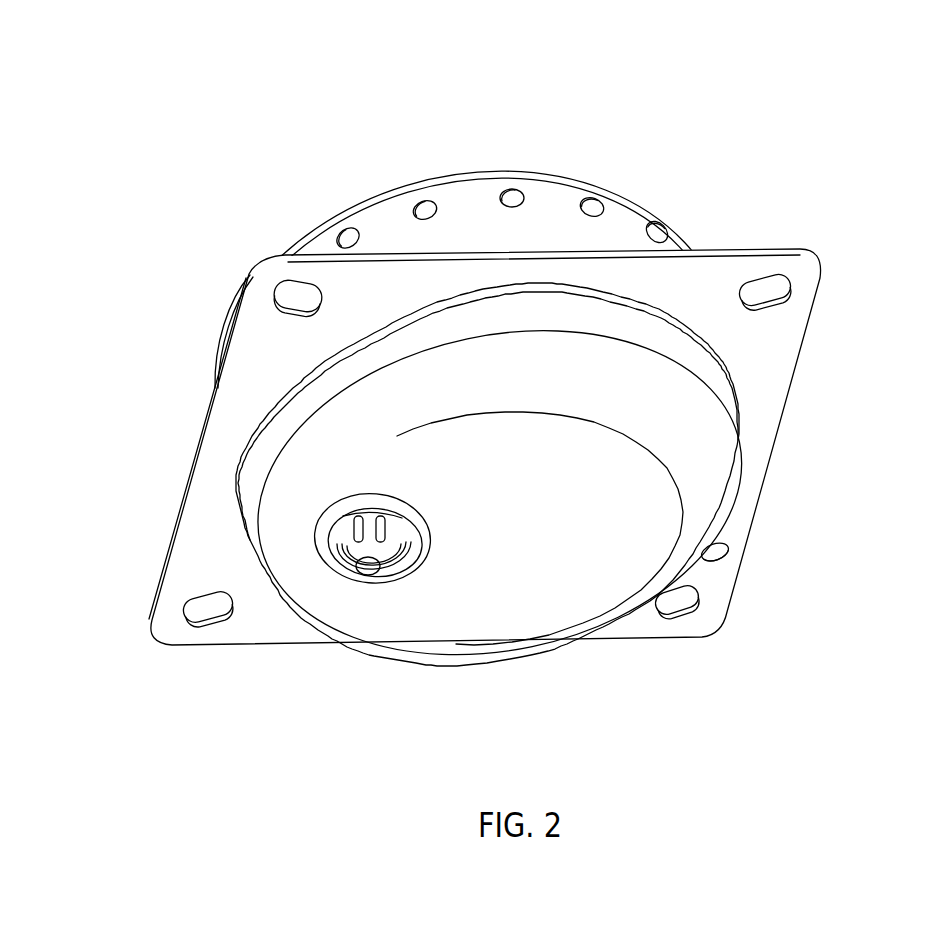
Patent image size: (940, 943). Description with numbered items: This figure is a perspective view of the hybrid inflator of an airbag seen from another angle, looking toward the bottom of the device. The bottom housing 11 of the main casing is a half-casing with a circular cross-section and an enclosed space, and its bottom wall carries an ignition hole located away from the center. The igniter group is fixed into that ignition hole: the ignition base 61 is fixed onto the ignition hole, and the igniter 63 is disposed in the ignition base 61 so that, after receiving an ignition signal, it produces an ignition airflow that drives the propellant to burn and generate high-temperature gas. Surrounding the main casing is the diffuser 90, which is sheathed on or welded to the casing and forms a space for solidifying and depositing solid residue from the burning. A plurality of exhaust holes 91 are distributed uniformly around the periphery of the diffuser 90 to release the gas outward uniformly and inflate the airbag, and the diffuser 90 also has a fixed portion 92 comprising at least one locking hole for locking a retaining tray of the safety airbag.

The bottom housing 11 is at (715, 442).
The ignition base 61 is at (418, 548).
The igniter 63 is at (397, 436).
The diffuser 90 is at (547, 177).
The exhaust holes 91 is at (510, 193).
The fixed portion 92 is at (765, 283).